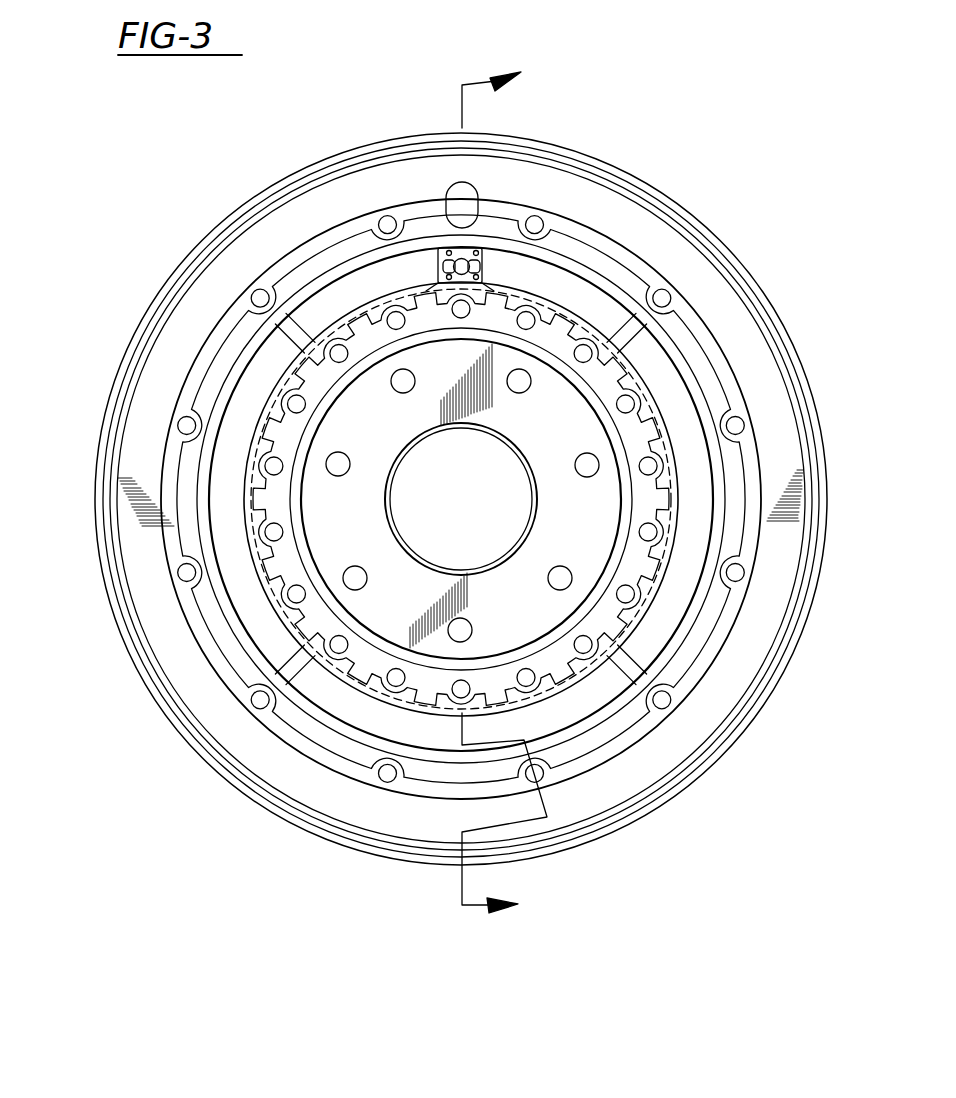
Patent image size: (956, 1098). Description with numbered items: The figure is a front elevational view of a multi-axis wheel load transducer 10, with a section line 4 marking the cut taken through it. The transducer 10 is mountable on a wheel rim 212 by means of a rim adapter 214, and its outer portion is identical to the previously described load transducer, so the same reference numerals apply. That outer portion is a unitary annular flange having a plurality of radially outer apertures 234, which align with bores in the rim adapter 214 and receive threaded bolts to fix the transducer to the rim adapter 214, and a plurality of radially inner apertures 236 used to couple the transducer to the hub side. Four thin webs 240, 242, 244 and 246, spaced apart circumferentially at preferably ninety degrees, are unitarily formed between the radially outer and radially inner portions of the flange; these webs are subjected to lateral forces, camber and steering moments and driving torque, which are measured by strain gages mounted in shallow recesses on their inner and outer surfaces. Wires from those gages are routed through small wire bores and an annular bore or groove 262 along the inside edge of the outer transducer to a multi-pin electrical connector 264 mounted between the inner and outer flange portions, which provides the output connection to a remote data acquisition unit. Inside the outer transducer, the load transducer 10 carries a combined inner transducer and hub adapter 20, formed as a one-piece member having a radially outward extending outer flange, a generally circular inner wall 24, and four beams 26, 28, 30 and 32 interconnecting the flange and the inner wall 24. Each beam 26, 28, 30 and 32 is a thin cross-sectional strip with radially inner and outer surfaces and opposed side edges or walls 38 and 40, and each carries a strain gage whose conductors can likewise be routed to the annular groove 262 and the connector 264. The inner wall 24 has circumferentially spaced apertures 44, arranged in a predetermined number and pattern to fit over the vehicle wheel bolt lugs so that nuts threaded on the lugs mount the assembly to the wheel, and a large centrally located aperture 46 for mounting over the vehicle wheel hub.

The multi-axis wheel load transducer 10 is at (734, 150).
The combined inner transducer and hub adapter 20 is at (461, 511).
The inner wall 24 is at (318, 563).
The beam 26 is at (481, 372).
The beam 28 is at (616, 505).
The beam 30 is at (494, 656).
The beam 32 is at (310, 515).
The side edge 38 is at (457, 350).
The side edge 40 is at (533, 312).
The circumferentially spaced apertures 44 is at (346, 458).
The centrally located aperture 46 is at (437, 566).
The wheel rim 212 is at (307, 167).
The rim adapter 214 is at (278, 238).
The radially outer apertures 234 is at (665, 289).
The radially inner apertures 236 is at (640, 408).
The web 240 is at (615, 333).
The web 242 is at (640, 668).
The web 244 is at (280, 663).
The web 246 is at (260, 347).
The annular bore 262 is at (544, 495).
The electrical connector 264 is at (488, 256).
The section line 4- 4 is at (504, 498).